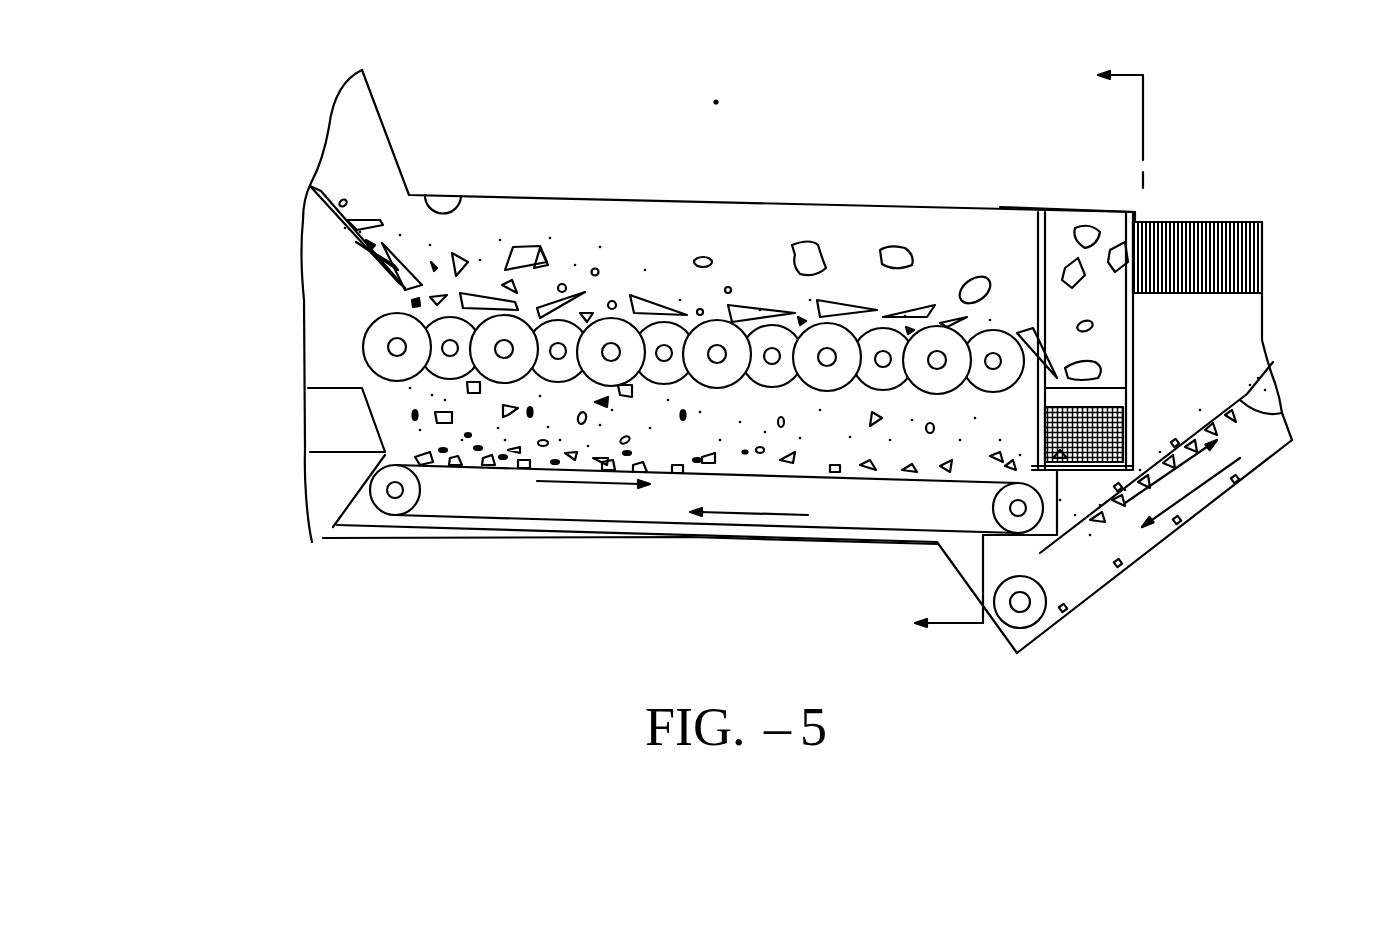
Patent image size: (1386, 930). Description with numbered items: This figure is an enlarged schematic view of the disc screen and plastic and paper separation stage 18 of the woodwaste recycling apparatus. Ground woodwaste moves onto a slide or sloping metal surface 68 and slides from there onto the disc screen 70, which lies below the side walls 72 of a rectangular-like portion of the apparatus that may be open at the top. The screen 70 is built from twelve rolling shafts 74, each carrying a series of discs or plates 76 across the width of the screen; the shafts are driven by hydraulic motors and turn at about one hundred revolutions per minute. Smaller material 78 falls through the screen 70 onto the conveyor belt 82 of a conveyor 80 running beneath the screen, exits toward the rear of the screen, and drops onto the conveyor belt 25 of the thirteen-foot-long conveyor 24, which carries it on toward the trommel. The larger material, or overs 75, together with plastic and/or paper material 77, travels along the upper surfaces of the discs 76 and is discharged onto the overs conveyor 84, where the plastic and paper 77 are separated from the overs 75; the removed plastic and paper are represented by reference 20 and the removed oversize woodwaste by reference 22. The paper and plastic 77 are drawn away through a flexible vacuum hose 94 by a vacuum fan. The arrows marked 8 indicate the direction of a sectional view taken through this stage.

The section line 8- 8 is at (1017, 353).
The disc screen and plastic and paper separation stage 18 is at (740, 83).
The plastic and paper 20 is at (1236, 216).
The oversize woodwaste (overs) 22 is at (1105, 203).
The conveyor 24 is at (1228, 516).
The conveyor belt 25 is at (1282, 413).
The slide or sloping metal surface 68 is at (323, 192).
The disc screen 70 is at (766, 250).
The side walls 72 is at (461, 196).
The rolling shafts 74 is at (395, 347).
The larger material (overs) 75 is at (522, 230).
The discs or plates 76 is at (631, 354).
The plastic and/or paper material 77 is at (908, 258).
The smaller material 78 is at (388, 432).
The conveyor 80 is at (557, 520).
The conveyor belt 82 is at (432, 465).
The overs conveyor 84 is at (1085, 430).
The flexible vacuum hose 94 is at (1170, 222).